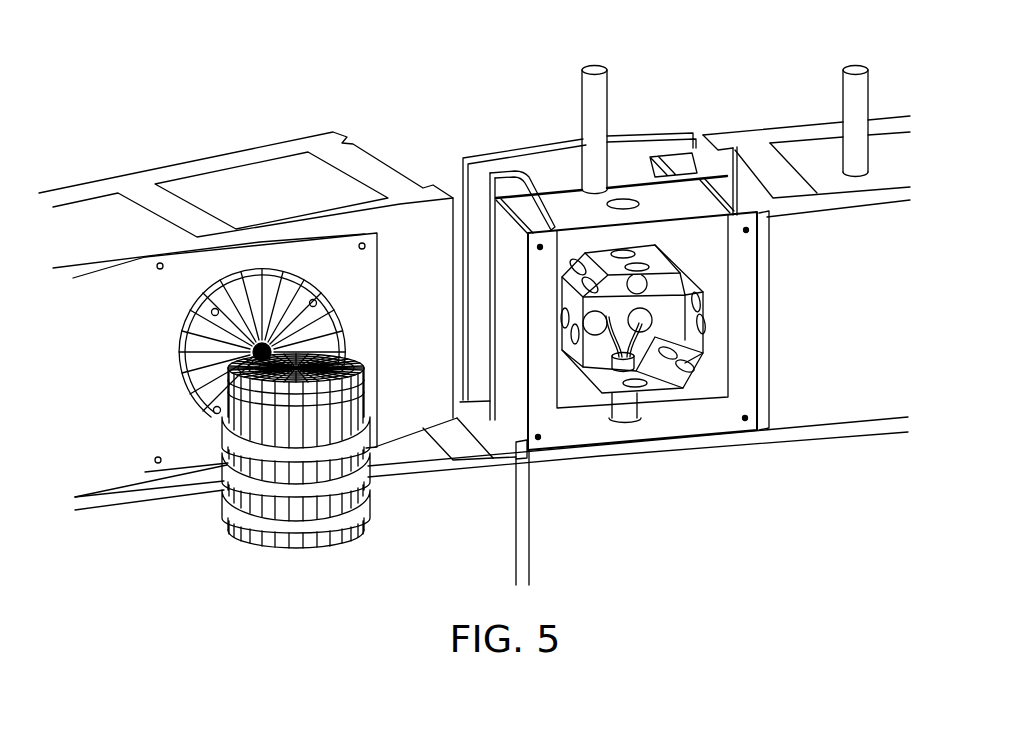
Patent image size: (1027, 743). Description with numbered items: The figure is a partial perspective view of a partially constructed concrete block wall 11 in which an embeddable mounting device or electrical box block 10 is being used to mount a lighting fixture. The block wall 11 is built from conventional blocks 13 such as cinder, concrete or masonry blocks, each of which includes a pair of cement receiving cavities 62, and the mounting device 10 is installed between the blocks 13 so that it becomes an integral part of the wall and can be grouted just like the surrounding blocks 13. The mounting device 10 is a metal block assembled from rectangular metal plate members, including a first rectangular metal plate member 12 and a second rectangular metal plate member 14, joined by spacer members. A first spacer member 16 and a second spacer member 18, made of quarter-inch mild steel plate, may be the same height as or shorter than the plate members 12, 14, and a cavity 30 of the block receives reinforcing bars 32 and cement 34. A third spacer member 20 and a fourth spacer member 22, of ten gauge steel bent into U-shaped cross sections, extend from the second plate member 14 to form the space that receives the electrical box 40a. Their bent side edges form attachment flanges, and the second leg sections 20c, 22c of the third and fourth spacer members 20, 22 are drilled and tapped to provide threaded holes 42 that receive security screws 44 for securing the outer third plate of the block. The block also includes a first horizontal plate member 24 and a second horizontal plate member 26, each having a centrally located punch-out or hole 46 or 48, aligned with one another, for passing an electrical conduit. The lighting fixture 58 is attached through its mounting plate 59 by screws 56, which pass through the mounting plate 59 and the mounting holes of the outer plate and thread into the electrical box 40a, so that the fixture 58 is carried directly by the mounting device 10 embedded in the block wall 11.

The embeddable mounting device or electrical box block 10 is at (664, 125).
The block wall 11 is at (803, 526).
The first rectangular metal plate member 12 is at (463, 158).
The blocks 13 is at (328, 128).
The second rectangular metal plate member 14 is at (517, 170).
The first spacer member 16 is at (491, 172).
The second spacer member 18 is at (676, 157).
The third spacer member 20 is at (532, 218).
The second leg section 20c is at (533, 400).
The fourth spacer member 22 is at (729, 195).
The second leg section 22c is at (762, 340).
The first horizontal plate member 24 is at (613, 188).
The second horizontal plate member 26 is at (603, 444).
The cavity 30 is at (553, 172).
The reinforcing bars 32 is at (608, 82).
The cement 34 is at (399, 457).
The electrical box 40a is at (740, 278).
The threaded holes 42 is at (749, 230).
The security screws 44 is at (365, 246).
The punch-out or hole 46 is at (640, 204).
The punch-out or hole 48 is at (641, 422).
The screws 56 is at (212, 310).
The fixture 58 is at (230, 518).
The mounting plate 59 is at (332, 320).
The cement receiving cavities 62 is at (100, 218).